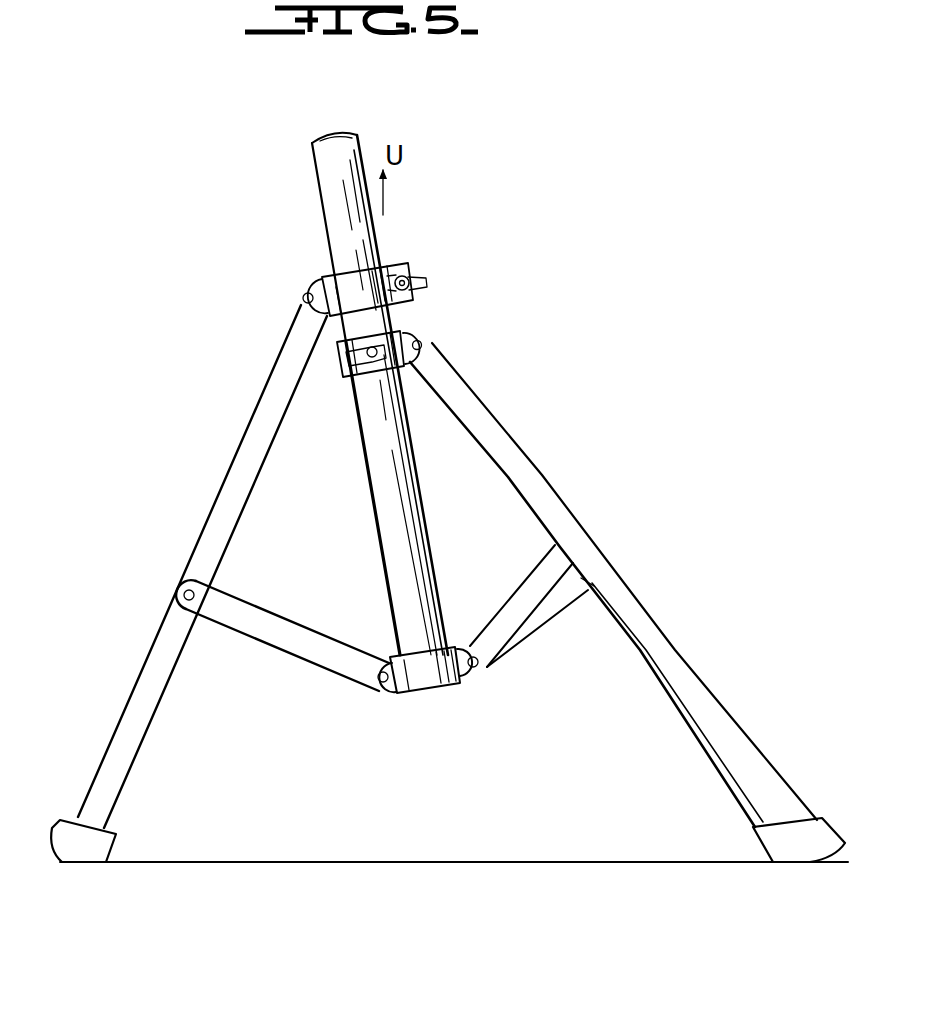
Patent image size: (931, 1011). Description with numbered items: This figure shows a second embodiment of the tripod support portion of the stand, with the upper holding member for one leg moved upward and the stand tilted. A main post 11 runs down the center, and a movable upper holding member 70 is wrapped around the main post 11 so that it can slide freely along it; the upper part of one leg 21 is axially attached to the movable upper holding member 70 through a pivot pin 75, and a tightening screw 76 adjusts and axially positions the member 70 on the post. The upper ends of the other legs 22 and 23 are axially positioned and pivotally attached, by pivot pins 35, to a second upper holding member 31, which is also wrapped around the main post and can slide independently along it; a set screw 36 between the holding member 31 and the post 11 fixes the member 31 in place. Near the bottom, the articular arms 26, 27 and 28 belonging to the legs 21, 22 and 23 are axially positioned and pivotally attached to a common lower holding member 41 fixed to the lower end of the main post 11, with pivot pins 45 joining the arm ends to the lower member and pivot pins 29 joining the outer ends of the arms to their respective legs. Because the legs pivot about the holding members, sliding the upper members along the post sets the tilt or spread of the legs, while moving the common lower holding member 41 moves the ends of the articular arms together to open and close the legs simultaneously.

The main post 11 is at (330, 187).
The movable upper holding member 70 is at (378, 265).
The pivot pin 75 is at (305, 292).
The tightening screw 76 is at (408, 282).
The second upper holding member 31 is at (412, 335).
The pivot pin 35 is at (428, 343).
The set screw 36 is at (372, 358).
The leg 21 is at (245, 440).
The leg 22 is at (636, 627).
The leg 23 is at (660, 690).
The pivot pin 29 is at (192, 602).
The articular arm 27 is at (530, 592).
The articular arm 28 is at (560, 598).
The articular arm 26 is at (308, 652).
The common lower holding member 41 is at (430, 695).
The pivot pin 45 is at (383, 683).